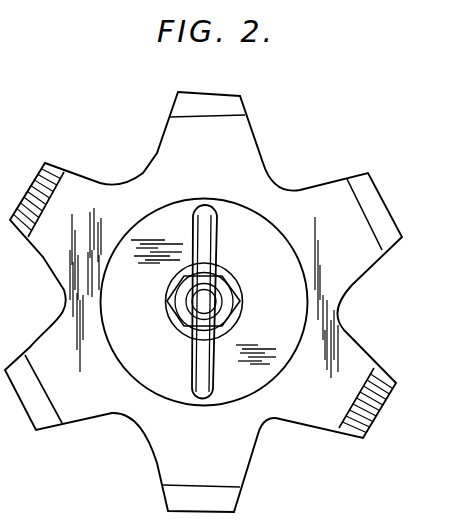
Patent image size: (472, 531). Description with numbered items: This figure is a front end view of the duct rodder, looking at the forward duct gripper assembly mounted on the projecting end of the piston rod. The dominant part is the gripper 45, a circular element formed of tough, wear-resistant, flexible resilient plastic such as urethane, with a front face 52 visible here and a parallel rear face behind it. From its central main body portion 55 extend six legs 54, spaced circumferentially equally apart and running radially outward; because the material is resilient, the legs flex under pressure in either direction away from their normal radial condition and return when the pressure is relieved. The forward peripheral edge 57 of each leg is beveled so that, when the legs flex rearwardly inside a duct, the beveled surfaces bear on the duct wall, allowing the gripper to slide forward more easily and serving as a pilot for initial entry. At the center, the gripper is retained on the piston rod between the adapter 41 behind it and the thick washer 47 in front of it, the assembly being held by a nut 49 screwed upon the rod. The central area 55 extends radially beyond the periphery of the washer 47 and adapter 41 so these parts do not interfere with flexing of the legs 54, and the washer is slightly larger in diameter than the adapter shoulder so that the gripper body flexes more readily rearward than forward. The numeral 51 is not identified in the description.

The adapter 41 is at (220, 272).
The gripper 45 is at (122, 178).
The washer 47 is at (276, 378).
The nut 49 is at (228, 300).
The slot 51 is at (200, 355).
The front face 52 is at (276, 416).
The legs 54 is at (157, 462).
The central main body portion 55 is at (337, 292).
The forward peripheral edge 57 is at (359, 182).